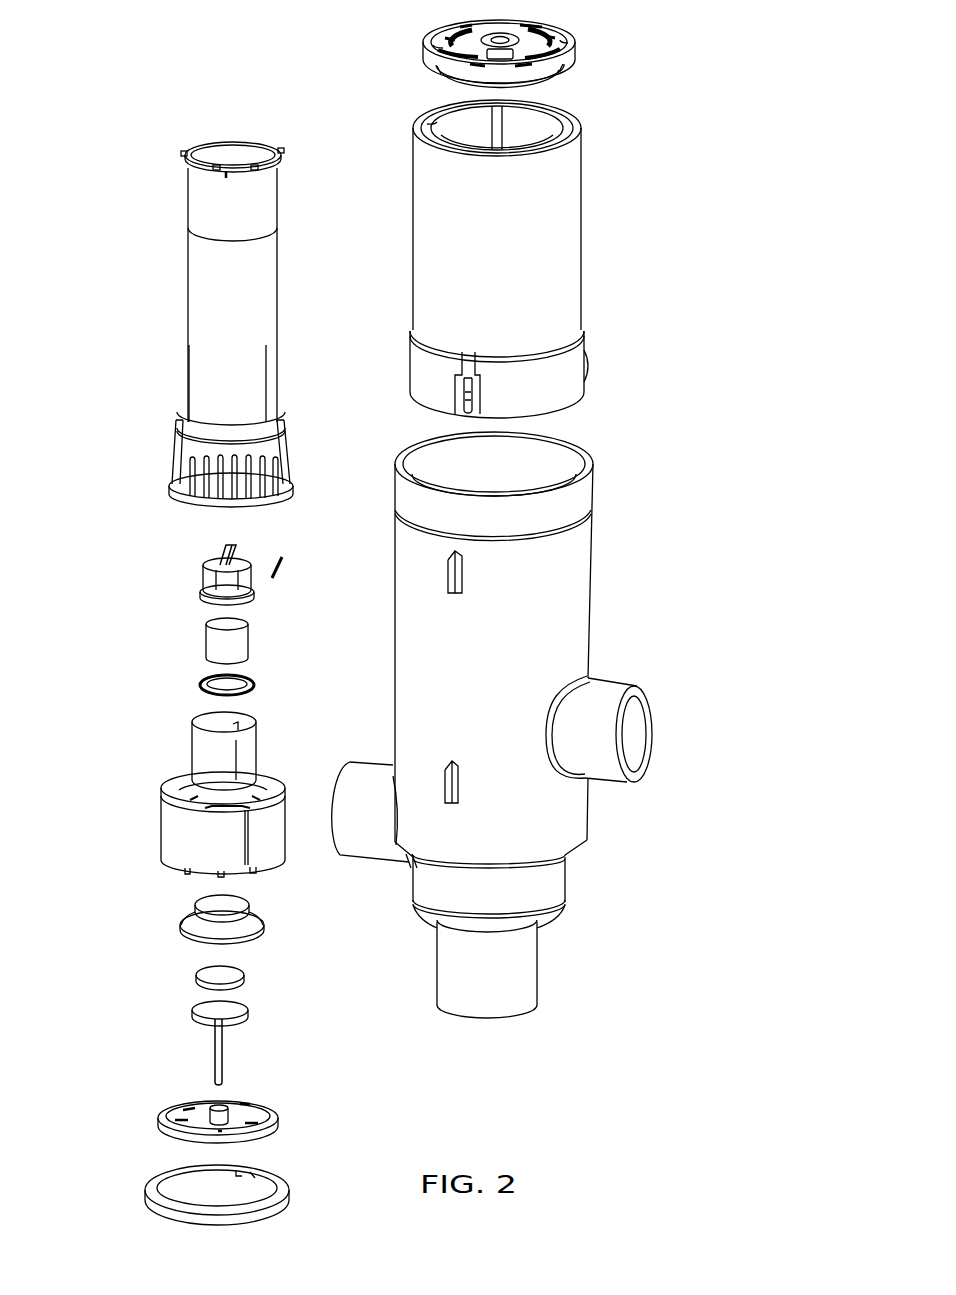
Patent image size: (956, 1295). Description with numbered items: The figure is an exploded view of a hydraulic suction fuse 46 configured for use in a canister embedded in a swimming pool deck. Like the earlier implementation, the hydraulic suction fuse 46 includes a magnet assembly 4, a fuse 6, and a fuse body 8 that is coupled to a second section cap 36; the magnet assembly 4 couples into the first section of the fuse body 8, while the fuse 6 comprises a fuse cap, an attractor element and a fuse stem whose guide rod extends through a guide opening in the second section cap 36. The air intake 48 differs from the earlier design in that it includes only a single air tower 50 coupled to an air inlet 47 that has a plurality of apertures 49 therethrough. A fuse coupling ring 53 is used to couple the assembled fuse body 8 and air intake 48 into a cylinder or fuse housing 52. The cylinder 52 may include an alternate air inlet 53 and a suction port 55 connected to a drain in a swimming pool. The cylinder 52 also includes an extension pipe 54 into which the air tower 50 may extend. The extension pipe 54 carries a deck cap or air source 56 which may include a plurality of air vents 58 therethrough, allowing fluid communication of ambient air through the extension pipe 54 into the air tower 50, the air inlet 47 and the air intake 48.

The magnet assembly 4 is at (185, 556).
The fuse 6 is at (150, 1137).
The fuse body 8 is at (160, 715).
The second section cap 36 is at (273, 1127).
The hydraulic suction fuse 46 is at (631, 308).
The air inlet 47 is at (238, 473).
The air intake 48 is at (214, 253).
The apertures 49 is at (215, 503).
The air tower 50 is at (236, 153).
The fuse housing 52 is at (575, 595).
The fuse coupling ring 53 is at (630, 730).
The extension pipe 54 is at (563, 322).
The suction port 55 is at (483, 1020).
The deck cap 56 is at (440, 52).
The air vents 58 is at (445, 25).